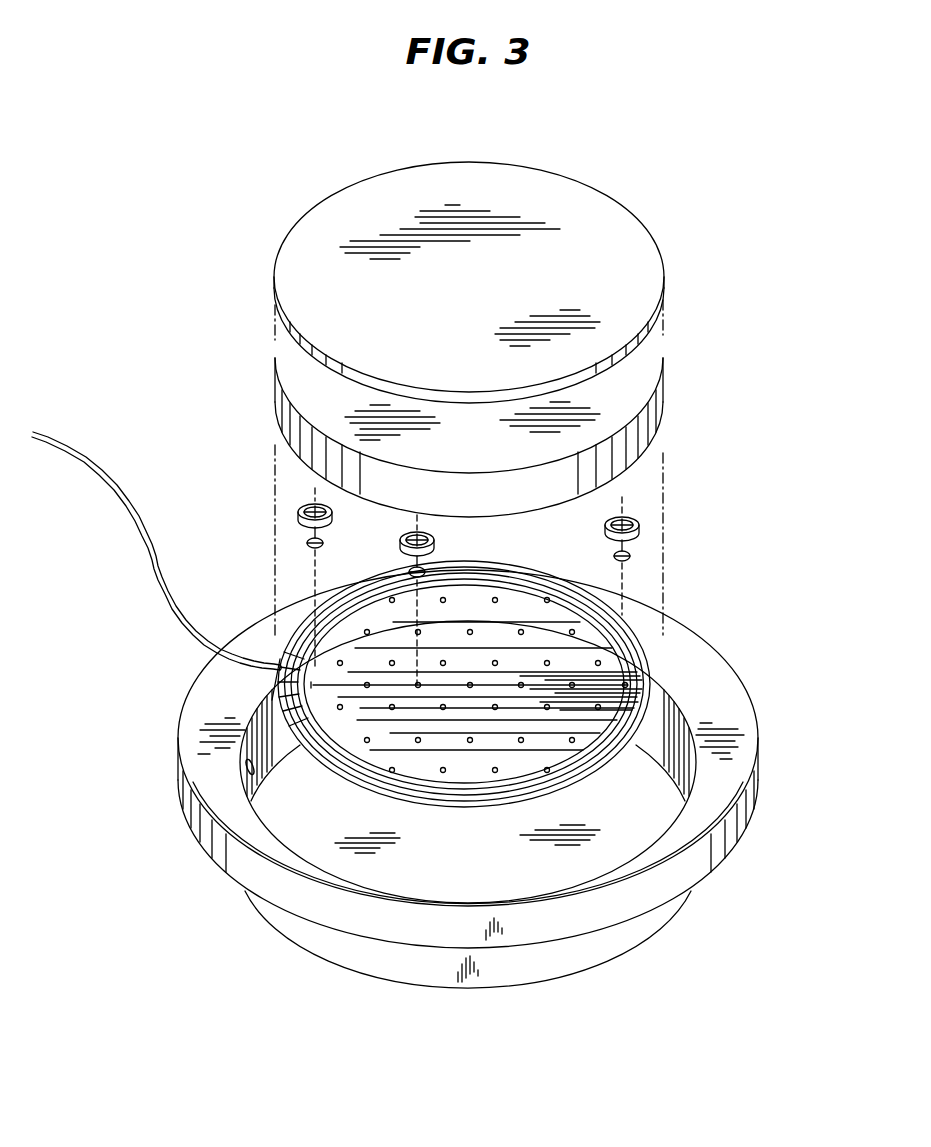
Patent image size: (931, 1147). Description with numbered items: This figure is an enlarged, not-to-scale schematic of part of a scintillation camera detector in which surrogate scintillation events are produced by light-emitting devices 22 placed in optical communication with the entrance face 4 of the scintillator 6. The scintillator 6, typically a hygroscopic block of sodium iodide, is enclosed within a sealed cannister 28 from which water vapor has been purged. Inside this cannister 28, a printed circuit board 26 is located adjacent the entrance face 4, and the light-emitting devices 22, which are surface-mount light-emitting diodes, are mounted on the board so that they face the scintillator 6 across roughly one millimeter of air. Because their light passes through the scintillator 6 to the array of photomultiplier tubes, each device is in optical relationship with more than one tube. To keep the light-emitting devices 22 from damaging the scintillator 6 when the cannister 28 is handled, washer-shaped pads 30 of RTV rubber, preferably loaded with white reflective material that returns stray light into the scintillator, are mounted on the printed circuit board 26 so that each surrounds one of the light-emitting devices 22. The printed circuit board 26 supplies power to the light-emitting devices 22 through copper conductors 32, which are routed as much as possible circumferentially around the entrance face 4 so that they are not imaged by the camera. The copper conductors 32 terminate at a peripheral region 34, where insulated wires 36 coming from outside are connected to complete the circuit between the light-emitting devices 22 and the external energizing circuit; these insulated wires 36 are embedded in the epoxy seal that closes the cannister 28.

The entrance face 4 is at (547, 507).
The scintillator 6 is at (643, 428).
The light-emitting device 22 is at (305, 541).
The printed circuit board 26 is at (637, 638).
The sealed cannister 28 is at (753, 783).
The washer-shaped pad 30 is at (300, 506).
The copper conductor 32 is at (651, 682).
The peripheral region 34 is at (278, 668).
The insulated wire 36 is at (128, 501).